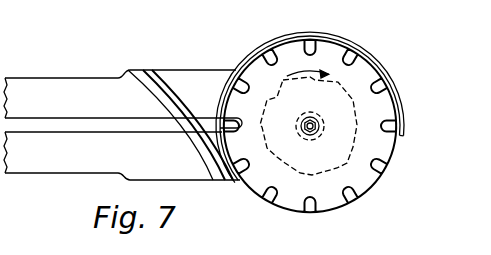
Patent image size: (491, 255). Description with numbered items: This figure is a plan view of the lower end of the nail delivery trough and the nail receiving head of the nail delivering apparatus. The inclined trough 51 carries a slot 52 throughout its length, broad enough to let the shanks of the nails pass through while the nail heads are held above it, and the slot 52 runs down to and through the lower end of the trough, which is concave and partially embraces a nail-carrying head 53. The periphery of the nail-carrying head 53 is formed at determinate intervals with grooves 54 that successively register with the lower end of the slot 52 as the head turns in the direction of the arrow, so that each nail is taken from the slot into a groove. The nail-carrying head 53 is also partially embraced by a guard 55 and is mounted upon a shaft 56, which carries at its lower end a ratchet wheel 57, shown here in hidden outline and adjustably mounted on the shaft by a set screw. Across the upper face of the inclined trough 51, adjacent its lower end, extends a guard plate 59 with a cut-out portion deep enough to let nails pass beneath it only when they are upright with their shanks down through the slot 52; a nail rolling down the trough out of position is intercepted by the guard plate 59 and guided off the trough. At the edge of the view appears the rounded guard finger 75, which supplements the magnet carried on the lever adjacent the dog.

The inclined trough 51 is at (66, 162).
The slot 52 is at (42, 124).
The nail-carrying head 53 is at (328, 130).
The grooves 54 is at (351, 193).
The guard 55 is at (347, 41).
The shaft 56 is at (319, 128).
The ratchet wheel 57 is at (343, 110).
The guard plate 59 is at (151, 80).
The rounded guard finger 75 is at (8, 66).